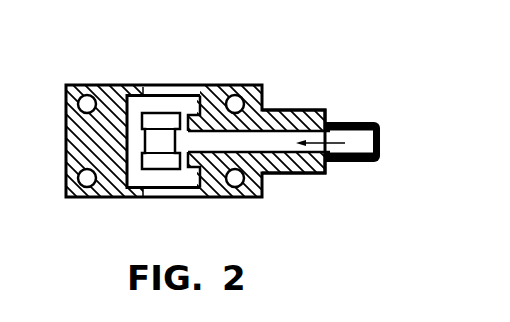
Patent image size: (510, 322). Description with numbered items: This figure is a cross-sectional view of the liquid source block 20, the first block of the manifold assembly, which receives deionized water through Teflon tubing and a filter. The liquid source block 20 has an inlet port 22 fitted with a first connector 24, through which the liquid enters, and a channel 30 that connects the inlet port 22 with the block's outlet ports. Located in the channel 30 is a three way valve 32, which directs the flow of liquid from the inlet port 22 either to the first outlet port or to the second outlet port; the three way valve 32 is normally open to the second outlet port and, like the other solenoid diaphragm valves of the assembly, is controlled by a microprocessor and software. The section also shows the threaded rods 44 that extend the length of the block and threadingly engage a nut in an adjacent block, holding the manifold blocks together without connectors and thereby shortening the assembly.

The liquid source block 20 is at (105, 76).
The inlet port 22 is at (381, 143).
The first connector 24 is at (340, 163).
The channel 30 is at (266, 141).
The three way valve 32 is at (140, 100).
The threaded rods 44 is at (241, 190).